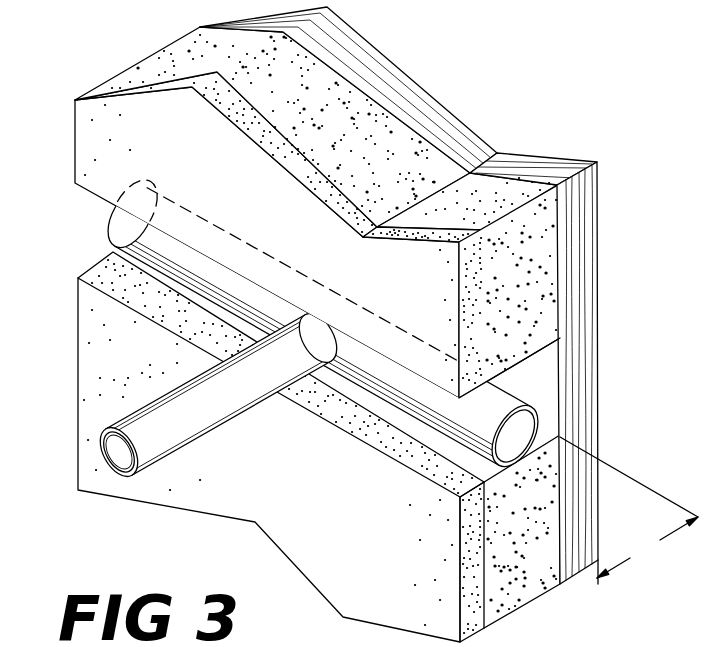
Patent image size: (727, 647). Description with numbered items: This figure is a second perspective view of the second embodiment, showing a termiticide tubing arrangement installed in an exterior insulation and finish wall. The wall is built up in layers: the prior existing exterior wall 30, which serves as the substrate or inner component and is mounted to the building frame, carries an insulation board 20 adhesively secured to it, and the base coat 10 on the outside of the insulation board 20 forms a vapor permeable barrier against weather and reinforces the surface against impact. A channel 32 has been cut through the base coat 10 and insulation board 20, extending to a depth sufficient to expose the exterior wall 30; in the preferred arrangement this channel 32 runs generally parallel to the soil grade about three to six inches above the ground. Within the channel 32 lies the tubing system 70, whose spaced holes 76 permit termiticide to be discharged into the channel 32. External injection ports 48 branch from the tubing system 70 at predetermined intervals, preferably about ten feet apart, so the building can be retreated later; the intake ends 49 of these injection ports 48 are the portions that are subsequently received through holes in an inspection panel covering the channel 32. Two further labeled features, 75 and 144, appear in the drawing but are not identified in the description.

The base coat 10 is at (270, 211).
The insulation board 20 is at (545, 245).
The exterior wall 30 is at (578, 347).
The channel 32 is at (547, 406).
The external injection ports 48 is at (224, 423).
The intake ends 49 is at (120, 463).
The tubing system 70 is at (102, 228).
The pipe end 75 is at (506, 396).
The spaced holes 76 is at (313, 322).
The dimension reference 144 is at (638, 646).